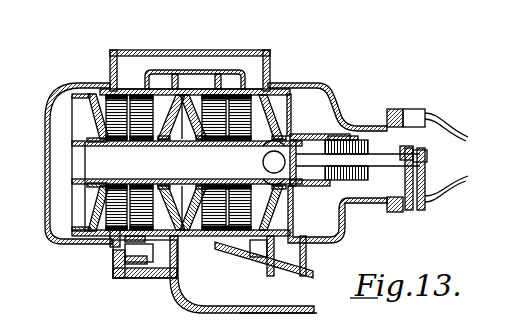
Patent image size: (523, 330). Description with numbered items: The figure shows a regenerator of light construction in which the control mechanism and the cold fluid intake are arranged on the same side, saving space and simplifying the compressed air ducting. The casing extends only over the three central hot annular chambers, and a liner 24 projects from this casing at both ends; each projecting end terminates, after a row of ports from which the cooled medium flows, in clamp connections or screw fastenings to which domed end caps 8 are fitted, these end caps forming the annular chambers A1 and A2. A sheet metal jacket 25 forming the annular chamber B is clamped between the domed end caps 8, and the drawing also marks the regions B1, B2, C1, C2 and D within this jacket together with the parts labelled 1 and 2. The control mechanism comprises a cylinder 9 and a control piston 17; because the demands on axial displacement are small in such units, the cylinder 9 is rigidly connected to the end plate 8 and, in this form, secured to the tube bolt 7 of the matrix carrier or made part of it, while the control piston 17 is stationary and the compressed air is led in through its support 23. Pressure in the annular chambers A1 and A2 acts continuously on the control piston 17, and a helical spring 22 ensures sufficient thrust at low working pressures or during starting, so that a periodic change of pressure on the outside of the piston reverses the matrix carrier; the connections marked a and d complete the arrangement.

The bracket 1 is at (168, 272).
The winding coil 2 is at (110, 123).
The tube bolt 7 is at (187, 164).
The end plate 8 is at (50, 116).
The cylinder 9 is at (309, 135).
The control piston 17 is at (331, 190).
The helical spring 22 is at (356, 140).
The support 23 is at (430, 190).
The liner 24 is at (180, 234).
The sheet metal jacket 25 is at (268, 51).
The annular chamber A1 is at (100, 100).
The annular chamber A2 is at (304, 90).
The annular chamber B is at (156, 58).
The left casing space B1 is at (136, 86).
The right casing space B2 is at (251, 82).
The left cell C1 is at (163, 80).
The right cell C2 is at (226, 80).
The middle cell cap D is at (197, 80).
The contact spring a is at (446, 157).
The outlet pipe d is at (285, 303).